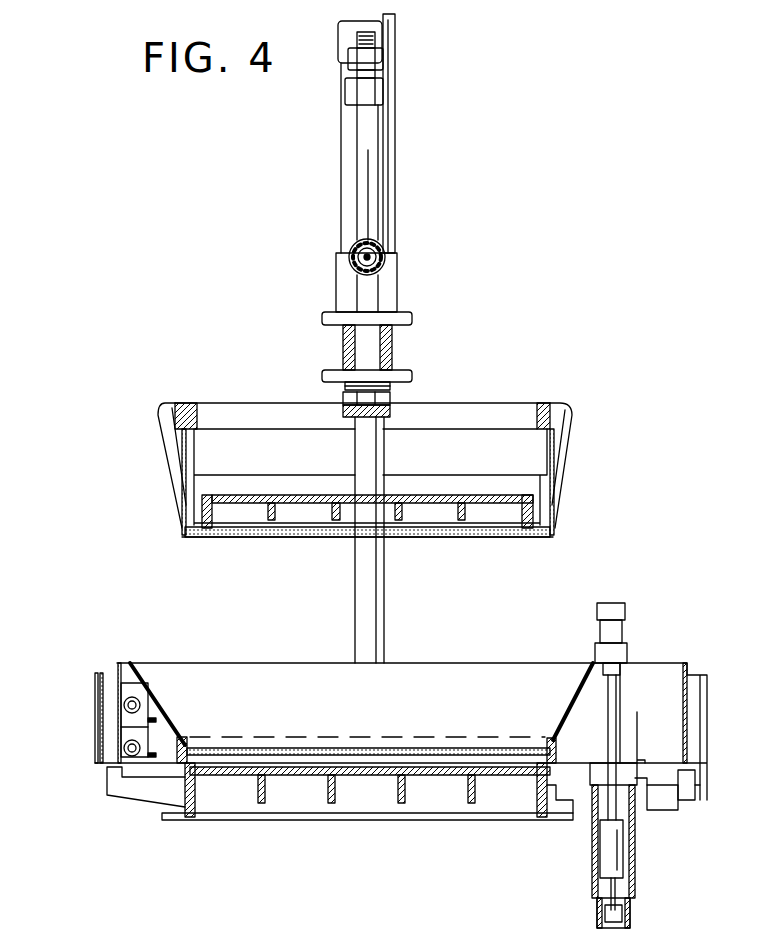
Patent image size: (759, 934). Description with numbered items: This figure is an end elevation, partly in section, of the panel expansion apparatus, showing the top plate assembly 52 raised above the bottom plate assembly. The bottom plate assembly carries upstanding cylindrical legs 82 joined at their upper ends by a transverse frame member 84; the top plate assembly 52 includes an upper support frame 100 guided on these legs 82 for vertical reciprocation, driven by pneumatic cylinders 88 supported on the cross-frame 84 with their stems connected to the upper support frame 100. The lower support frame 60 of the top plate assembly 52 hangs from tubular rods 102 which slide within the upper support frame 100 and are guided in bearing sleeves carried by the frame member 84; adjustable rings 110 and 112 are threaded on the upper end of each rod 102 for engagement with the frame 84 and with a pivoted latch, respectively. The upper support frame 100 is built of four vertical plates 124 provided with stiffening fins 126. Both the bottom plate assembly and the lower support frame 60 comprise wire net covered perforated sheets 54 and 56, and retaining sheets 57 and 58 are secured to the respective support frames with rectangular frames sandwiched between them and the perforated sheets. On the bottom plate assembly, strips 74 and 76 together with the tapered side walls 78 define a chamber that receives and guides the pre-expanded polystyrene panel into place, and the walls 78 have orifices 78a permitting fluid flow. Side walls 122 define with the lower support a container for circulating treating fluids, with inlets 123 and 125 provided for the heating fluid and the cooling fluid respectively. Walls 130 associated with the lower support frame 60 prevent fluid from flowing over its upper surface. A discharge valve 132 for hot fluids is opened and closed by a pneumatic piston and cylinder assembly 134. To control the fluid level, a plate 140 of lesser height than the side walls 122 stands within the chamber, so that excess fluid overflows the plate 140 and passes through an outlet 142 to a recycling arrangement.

The top plate assembly 52 is at (388, 469).
The wire net covered perforated sheet 54 is at (252, 755).
The wire net covered perforated sheet 56 is at (310, 538).
The retaining sheet 57 is at (230, 775).
The retaining sheet 58 is at (235, 537).
The lower support frame 60 is at (425, 488).
The strip 74 is at (338, 743).
The strip 76 is at (195, 748).
The tapered side wall 78 is at (152, 685).
The orifice 78a is at (183, 740).
The cylindrical leg 82 is at (385, 608).
The transverse frame member 84 is at (343, 350).
The pneumatic cylinder 88 is at (343, 153).
The upper support frame 100 is at (500, 412).
The tubular rod 102 is at (357, 192).
The adjustable ring 110 is at (383, 102).
The adjustable ring 112 is at (383, 58).
The side wall 122 is at (110, 712).
The inlet 123 is at (118, 705).
The vertical plate 124 is at (195, 458).
The inlet 125 is at (118, 745).
The stiffening fin 126 is at (163, 445).
The wall 130 is at (183, 492).
The discharge valve 132 is at (605, 847).
The pneumatic piston and cylinder assembly 134 is at (612, 633).
The plate 140 is at (637, 730).
The outlet 142 is at (665, 810).